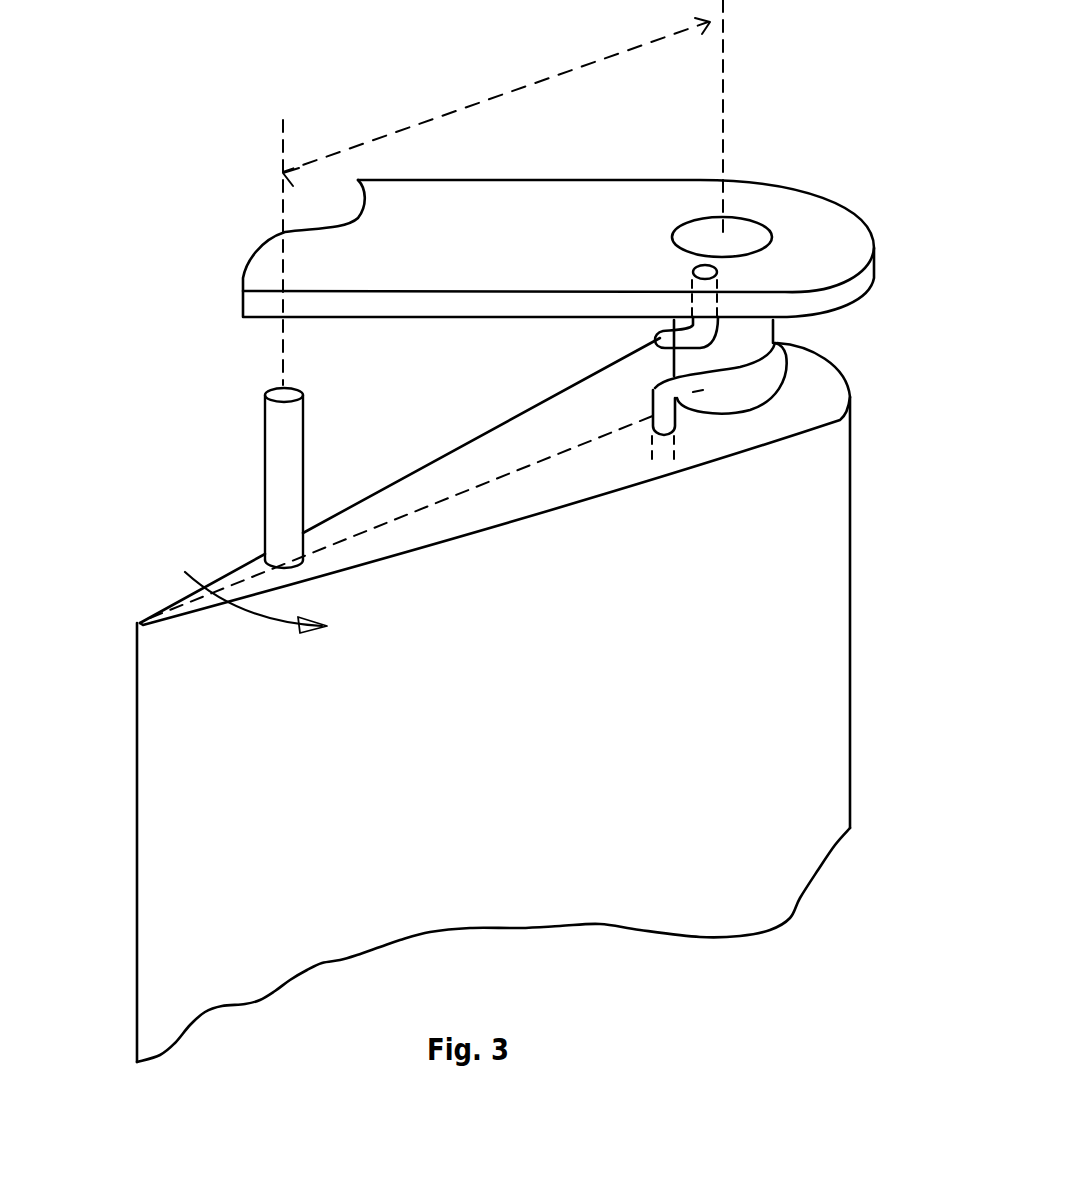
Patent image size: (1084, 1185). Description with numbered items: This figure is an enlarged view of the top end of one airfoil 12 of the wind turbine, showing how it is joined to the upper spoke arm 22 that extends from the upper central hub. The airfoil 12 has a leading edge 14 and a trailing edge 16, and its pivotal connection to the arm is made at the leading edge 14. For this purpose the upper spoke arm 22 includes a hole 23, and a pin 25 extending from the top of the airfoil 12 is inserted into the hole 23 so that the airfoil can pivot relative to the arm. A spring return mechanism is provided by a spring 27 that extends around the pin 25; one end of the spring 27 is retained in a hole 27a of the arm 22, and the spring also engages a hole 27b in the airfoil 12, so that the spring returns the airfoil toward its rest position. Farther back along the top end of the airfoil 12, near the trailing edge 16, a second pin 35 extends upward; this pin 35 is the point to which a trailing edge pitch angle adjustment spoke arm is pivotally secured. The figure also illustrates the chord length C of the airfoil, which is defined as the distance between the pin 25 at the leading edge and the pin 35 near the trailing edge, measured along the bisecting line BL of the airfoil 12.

The airfoil 12 is at (451, 451).
The leading edge 14 is at (846, 395).
The trailing edge 16 is at (136, 712).
The upper spoke arm 22 is at (612, 195).
The hole 23 is at (767, 228).
The pin 25 is at (778, 325).
The spring 27 is at (658, 402).
The hole of arm 27a is at (693, 272).
The hole of airfoil 27b is at (679, 437).
The pin 35 is at (282, 474).
The chord length C is at (496, 102).
The bisecting line BL is at (528, 458).